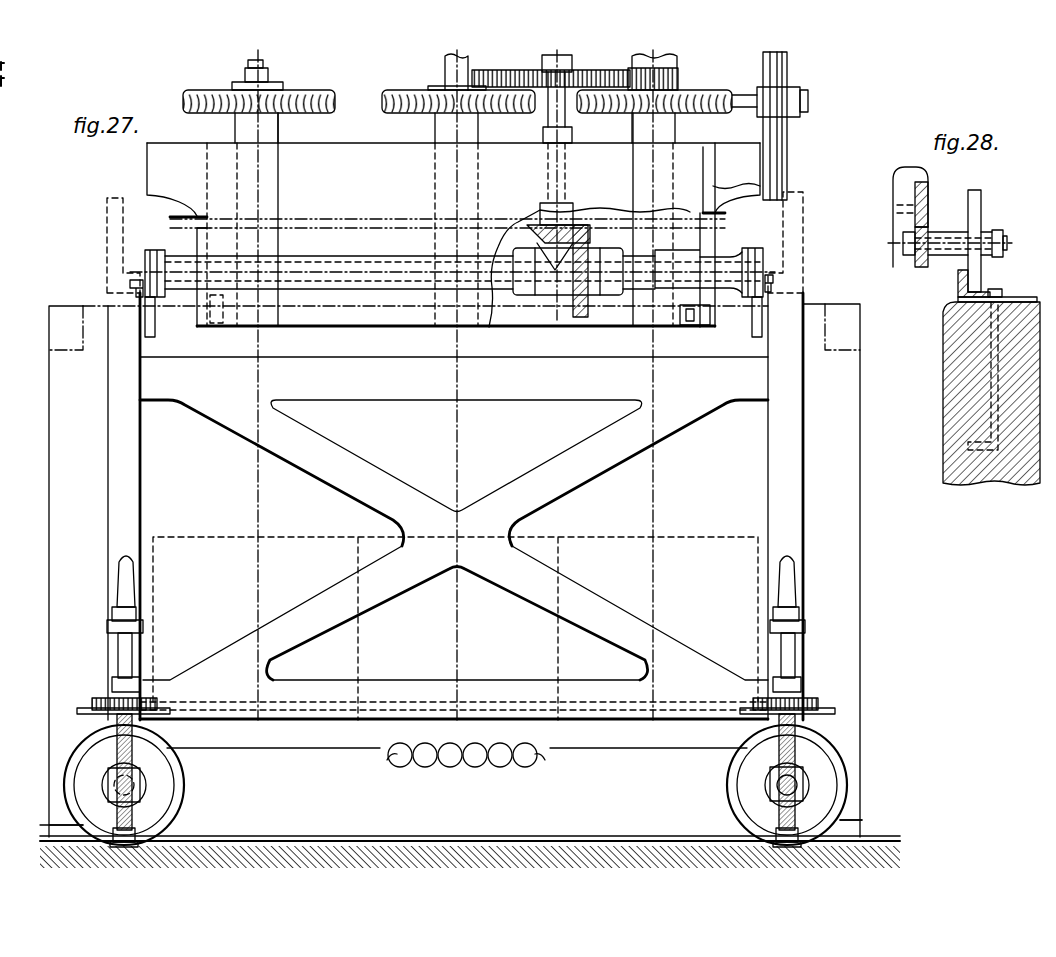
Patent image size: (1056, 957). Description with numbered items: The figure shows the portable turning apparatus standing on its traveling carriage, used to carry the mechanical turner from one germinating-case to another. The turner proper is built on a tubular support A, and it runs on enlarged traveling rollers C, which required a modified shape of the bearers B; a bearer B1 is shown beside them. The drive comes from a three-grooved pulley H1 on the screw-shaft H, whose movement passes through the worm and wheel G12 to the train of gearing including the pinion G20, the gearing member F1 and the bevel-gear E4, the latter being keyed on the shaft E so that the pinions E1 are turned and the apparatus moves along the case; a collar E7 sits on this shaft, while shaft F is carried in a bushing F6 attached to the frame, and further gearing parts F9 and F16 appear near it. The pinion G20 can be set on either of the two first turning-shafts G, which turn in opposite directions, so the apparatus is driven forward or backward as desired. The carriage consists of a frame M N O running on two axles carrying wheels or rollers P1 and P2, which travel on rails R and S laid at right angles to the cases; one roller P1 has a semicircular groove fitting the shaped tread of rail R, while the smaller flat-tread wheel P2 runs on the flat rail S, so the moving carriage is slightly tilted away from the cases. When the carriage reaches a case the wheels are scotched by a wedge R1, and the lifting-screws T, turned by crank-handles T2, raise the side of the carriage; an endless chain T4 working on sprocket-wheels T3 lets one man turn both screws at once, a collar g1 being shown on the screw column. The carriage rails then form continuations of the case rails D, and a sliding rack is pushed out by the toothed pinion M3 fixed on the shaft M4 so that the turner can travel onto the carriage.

In FIG. 27, the tubular support A is at (455, 443).
In FIG. 28, the bearers B is at (950, 217).
In FIG. 27, the bearing bracket B1 is at (456, 235).
In FIG. 27, the traveling rollers C is at (455, 232).
In FIG. 28, the traveling rollers C is at (974, 233).
In FIG. 28, the rails D is at (966, 283).
In FIG. 27, the shaft E is at (462, 271).
In FIG. 27, the pinions E1 is at (155, 264).
In FIG. 27, the bevel-gear E4 is at (568, 263).
In FIG. 27, the collar E7 is at (753, 263).
In FIG. 27, the gearing member F' F1 is at (568, 166).
In FIG. 27, the bushing F6 is at (549, 236).
In FIG. 27, the bevel gear F9 is at (566, 271).
In FIG. 27, the spindle with spur gear F16 is at (572, 136).
In FIG. 27, the turning-shafts G is at (447, 67).
In FIG. 27, the wheel G12 is at (406, 113).
In FIG. 27, the pinion G20 is at (668, 79).
In FIG. 27, the collar g1 is at (803, 621).
In FIG. 27, the screw-shaft H is at (808, 101).
In FIG. 27, the pulley H1 is at (782, 126).
In FIG. 27, the carriage frame member M is at (455, 506).
In FIG. 27, the toothed pinion M3 is at (150, 317).
In FIG. 27, the shaft M4 is at (425, 296).
In FIG. 27, the carriage frame member N is at (454, 540).
In FIG. 27, the carriage frame member O is at (457, 738).
In FIG. 27, the wheels or rollers P1 is at (456, 785).
In FIG. 27, the wheels P2 is at (462, 785).
In FIG. 27, the rail R is at (470, 832).
In FIG. 27, the wedge R1 is at (451, 815).
In FIG. 27, the flat rail S is at (470, 846).
In FIG. 27, the screw T is at (453, 780).
In FIG. 27, the crank-handle T2 is at (138, 545).
In FIG. 27, the sprocket-wheels T3 is at (459, 699).
In FIG. 27, the endless chain T4 is at (478, 716).